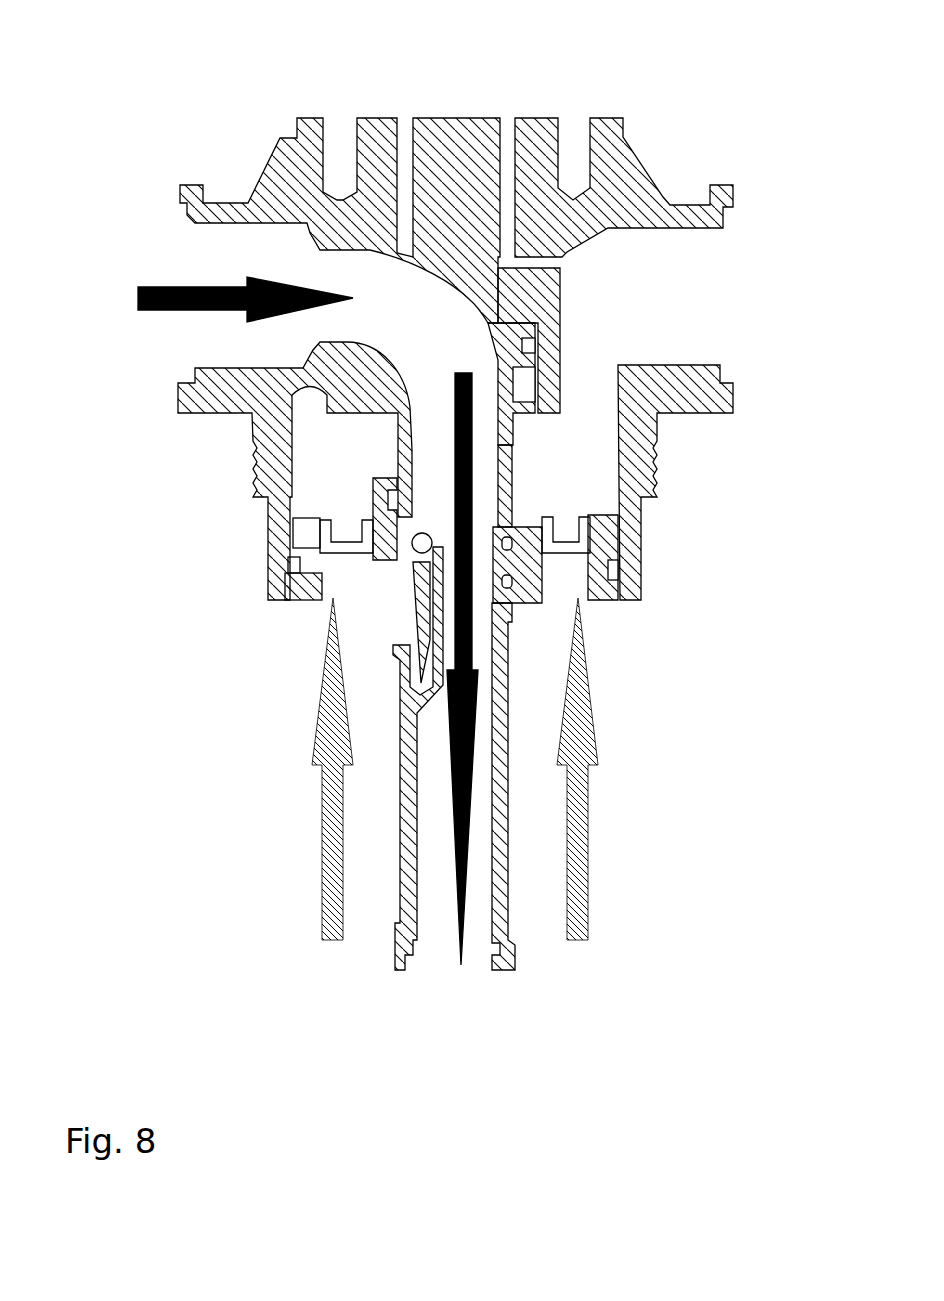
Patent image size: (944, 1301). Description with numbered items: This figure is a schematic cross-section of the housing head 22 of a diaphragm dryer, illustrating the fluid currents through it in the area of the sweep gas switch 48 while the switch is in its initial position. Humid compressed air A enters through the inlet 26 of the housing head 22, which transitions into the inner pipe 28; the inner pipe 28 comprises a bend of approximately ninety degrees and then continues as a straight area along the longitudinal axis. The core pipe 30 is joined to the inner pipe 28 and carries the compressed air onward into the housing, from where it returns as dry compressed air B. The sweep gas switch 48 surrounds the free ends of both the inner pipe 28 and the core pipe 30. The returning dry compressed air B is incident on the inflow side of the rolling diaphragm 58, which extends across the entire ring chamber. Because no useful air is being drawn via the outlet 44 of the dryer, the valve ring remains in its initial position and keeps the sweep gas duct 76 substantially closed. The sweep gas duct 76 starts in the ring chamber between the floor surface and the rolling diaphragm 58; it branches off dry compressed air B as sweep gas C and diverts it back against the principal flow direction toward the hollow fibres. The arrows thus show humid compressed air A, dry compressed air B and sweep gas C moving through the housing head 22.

The housing head 22 is at (615, 178).
The inlet 26 is at (193, 253).
The inner pipe 28 is at (513, 447).
The core pipe 30 is at (500, 880).
The outlet 44 is at (665, 282).
The sweep gas switch 48 is at (610, 593).
The rolling diaphragm 58 is at (370, 556).
The sweep gas duct 76 is at (367, 565).
The humid compressed air A is at (138, 308).
The dry compressed air B is at (322, 815).
The sweep gas C is at (372, 588).